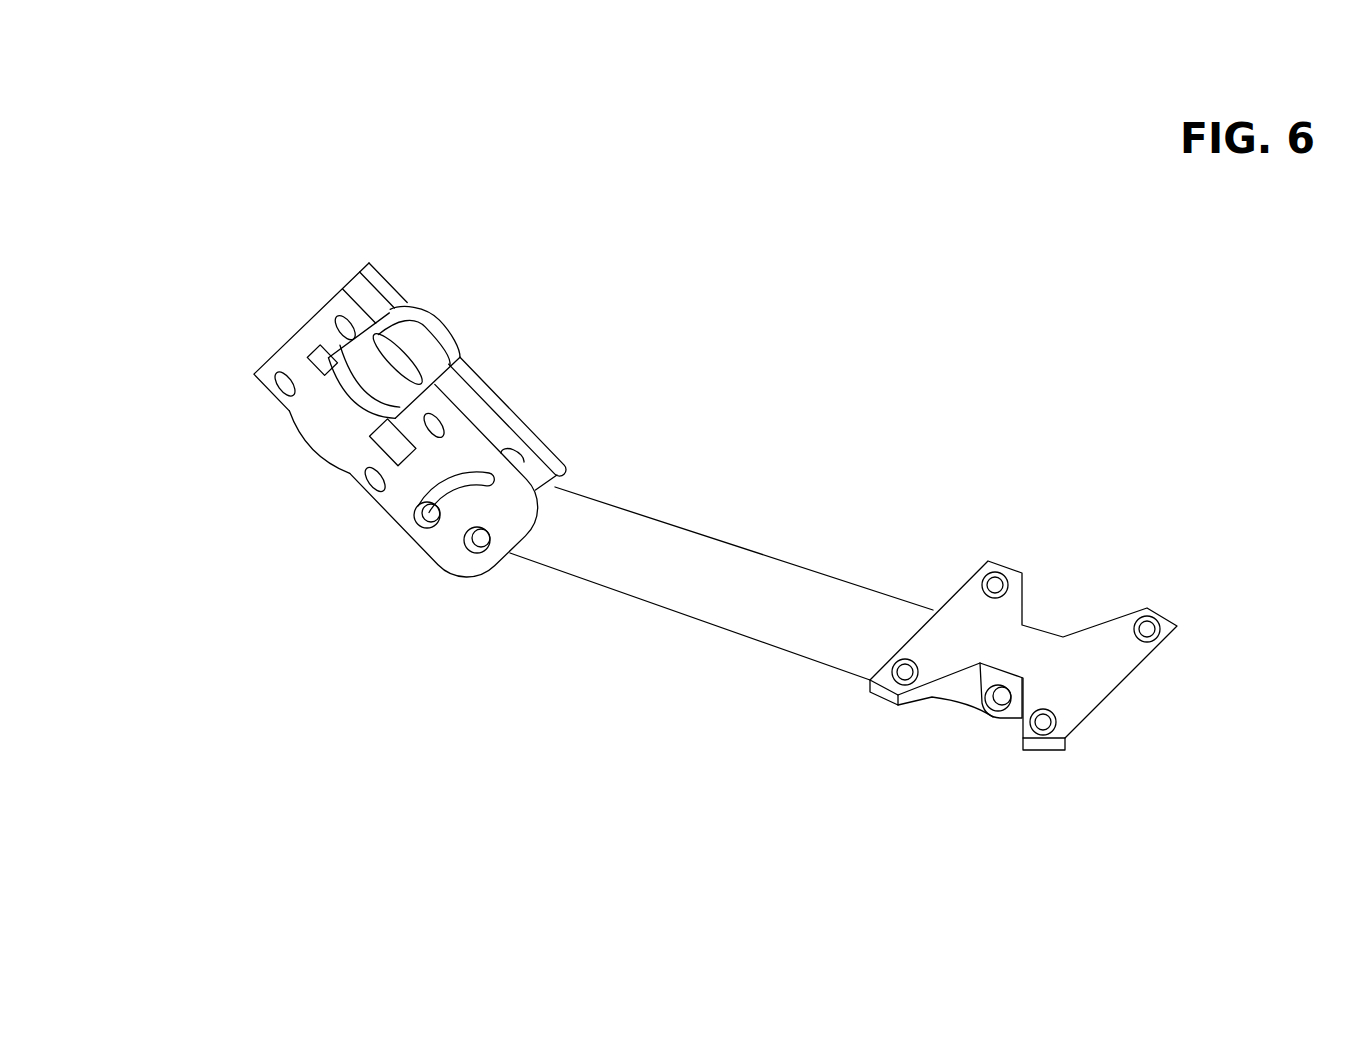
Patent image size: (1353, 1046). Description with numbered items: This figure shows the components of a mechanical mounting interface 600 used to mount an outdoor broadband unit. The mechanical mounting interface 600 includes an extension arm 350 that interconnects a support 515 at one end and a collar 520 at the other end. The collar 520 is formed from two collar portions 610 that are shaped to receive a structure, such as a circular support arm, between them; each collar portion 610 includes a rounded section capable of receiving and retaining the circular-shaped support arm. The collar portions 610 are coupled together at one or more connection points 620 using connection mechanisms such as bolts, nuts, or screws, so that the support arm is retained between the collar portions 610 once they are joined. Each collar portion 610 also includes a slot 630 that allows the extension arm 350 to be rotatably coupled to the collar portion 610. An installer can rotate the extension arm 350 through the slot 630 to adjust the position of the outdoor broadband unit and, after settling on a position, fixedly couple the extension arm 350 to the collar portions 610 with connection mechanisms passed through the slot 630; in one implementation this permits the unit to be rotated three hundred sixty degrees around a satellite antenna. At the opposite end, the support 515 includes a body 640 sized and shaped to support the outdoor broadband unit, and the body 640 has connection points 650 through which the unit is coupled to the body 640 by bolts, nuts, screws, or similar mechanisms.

The mechanical mounting interface 600 is at (188, 84).
The collar 520 is at (452, 308).
The collar portion 610 is at (300, 372).
The connection point 620 is at (283, 390).
The slot 630 is at (451, 493).
The extension arm 350 is at (657, 583).
The support 515 is at (1017, 545).
The body 640 is at (1107, 678).
The connection point 650 is at (910, 685).